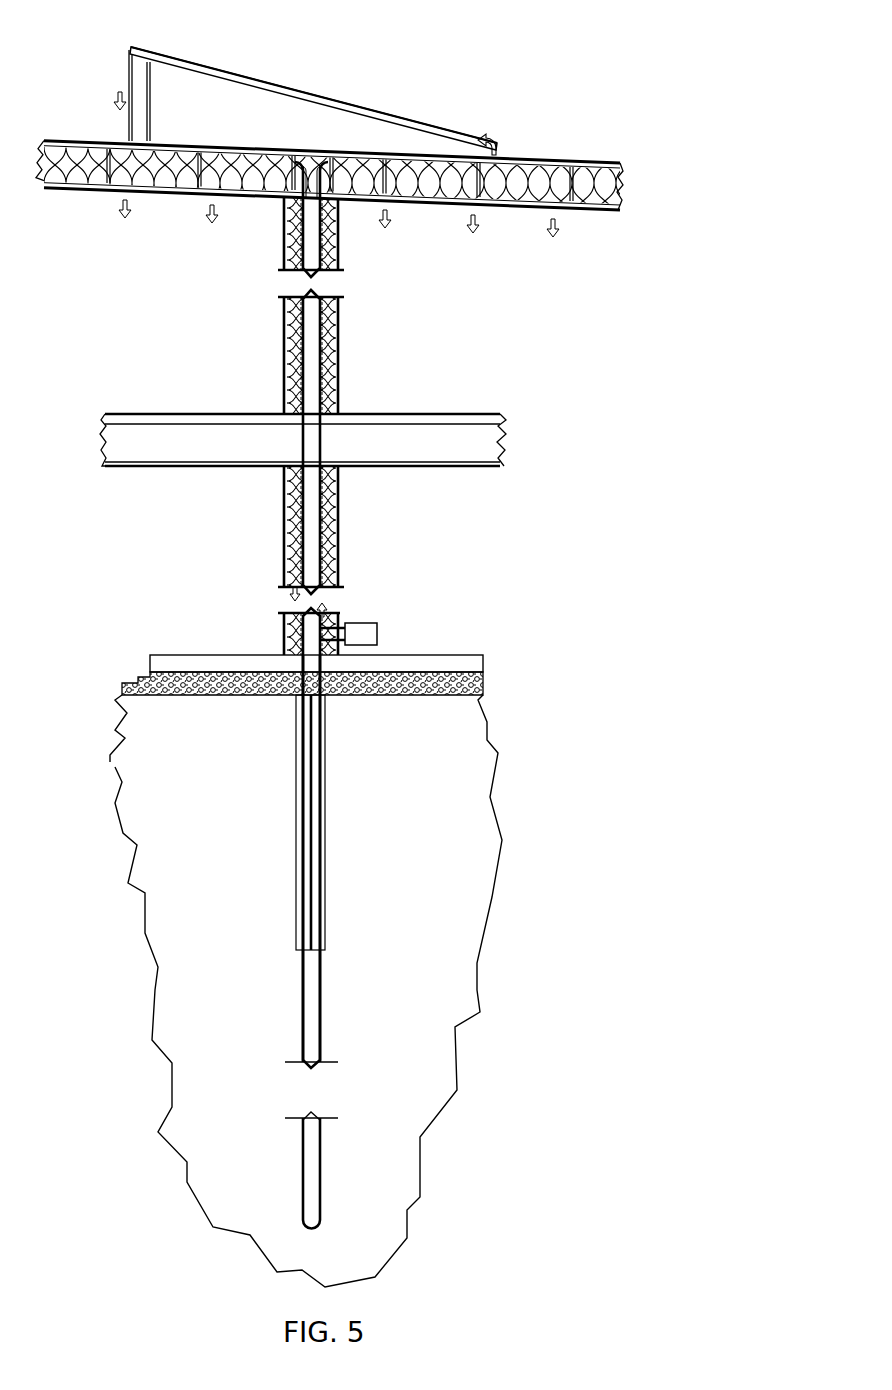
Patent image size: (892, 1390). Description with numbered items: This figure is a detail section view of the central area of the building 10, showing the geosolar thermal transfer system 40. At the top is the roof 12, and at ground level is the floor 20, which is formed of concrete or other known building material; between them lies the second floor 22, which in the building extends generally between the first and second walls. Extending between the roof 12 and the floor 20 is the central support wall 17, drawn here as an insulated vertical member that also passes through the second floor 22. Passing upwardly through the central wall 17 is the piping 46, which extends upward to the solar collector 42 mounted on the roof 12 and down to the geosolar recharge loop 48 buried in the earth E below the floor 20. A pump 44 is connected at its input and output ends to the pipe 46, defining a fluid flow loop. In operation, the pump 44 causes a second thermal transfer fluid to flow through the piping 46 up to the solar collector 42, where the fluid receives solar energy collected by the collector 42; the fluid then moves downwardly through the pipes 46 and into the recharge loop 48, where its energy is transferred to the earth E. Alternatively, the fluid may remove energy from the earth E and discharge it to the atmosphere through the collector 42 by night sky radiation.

The building 10 is at (545, 44).
The roof 12 is at (555, 135).
The central support wall 17 is at (340, 380).
The floor 20 is at (447, 665).
The second floor 22 is at (435, 463).
The geosolar thermal transfer system 40 is at (312, 48).
The solar collector 42 is at (345, 107).
The pump 44 is at (370, 635).
The piping 46 is at (325, 612).
The geosolar recharge loop 48 is at (343, 1005).
The earth E is at (475, 780).